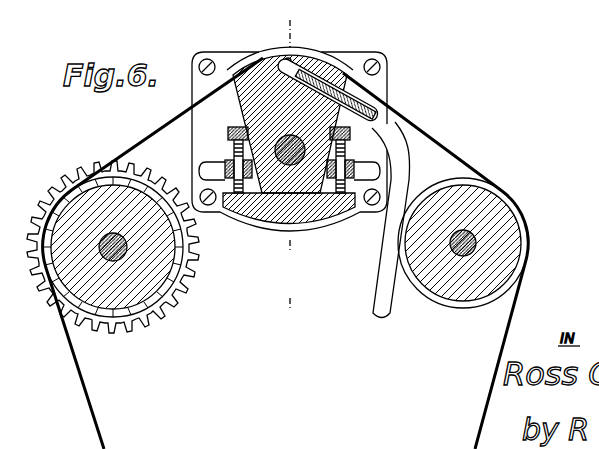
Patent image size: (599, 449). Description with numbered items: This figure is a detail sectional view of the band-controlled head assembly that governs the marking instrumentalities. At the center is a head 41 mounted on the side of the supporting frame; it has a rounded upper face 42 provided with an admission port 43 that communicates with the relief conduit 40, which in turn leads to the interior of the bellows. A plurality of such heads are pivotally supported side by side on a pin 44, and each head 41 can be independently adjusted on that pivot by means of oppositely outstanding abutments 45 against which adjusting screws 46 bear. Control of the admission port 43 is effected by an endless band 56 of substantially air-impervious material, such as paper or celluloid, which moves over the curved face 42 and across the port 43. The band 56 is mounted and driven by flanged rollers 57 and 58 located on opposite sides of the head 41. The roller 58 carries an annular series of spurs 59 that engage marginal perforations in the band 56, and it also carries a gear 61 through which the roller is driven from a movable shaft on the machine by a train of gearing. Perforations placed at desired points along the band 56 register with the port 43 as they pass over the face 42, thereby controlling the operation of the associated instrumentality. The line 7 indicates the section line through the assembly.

The section line 7- 7 is at (295, 165).
The relief conduit 40 is at (407, 158).
The head 41 is at (249, 108).
The rounded upper face 42 is at (318, 77).
The admission port 43 is at (283, 62).
The pin 44 is at (281, 213).
The abutments 45 is at (236, 197).
The adjusting screws 46 is at (234, 151).
The endless band 56 is at (517, 301).
The flanged roller 57 is at (498, 197).
The flanged roller 58 is at (138, 285).
The spurs 59 is at (68, 201).
The gear 61 is at (98, 174).